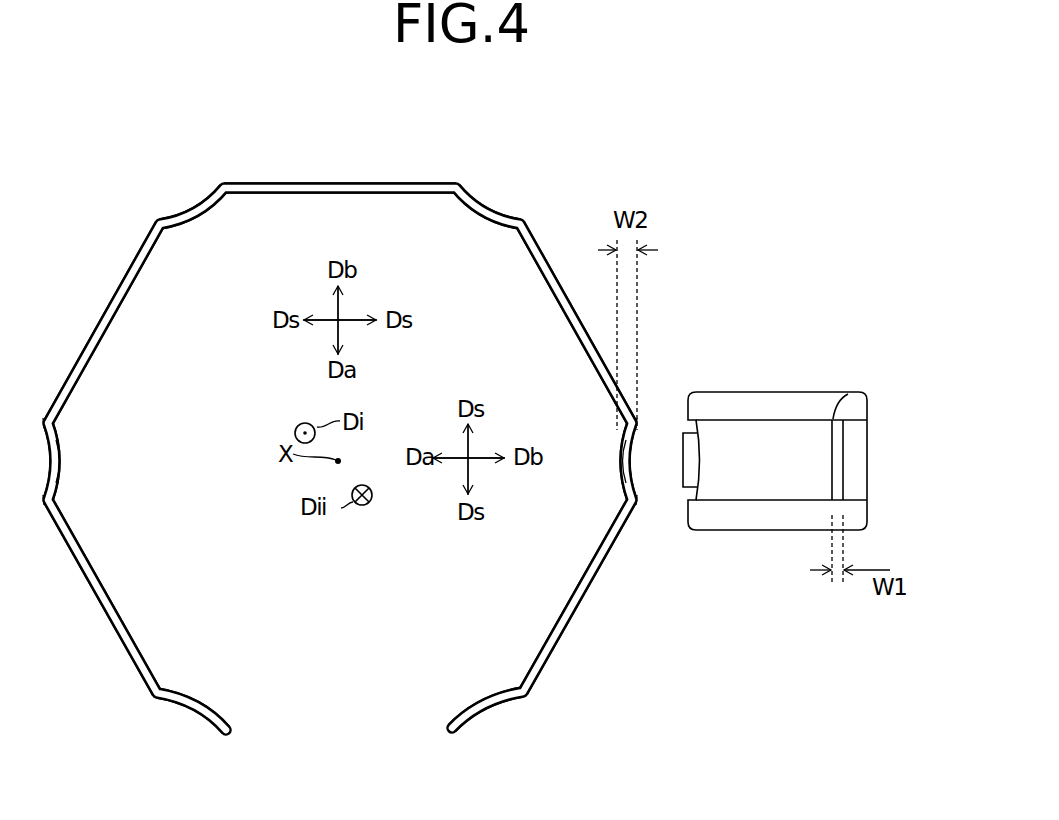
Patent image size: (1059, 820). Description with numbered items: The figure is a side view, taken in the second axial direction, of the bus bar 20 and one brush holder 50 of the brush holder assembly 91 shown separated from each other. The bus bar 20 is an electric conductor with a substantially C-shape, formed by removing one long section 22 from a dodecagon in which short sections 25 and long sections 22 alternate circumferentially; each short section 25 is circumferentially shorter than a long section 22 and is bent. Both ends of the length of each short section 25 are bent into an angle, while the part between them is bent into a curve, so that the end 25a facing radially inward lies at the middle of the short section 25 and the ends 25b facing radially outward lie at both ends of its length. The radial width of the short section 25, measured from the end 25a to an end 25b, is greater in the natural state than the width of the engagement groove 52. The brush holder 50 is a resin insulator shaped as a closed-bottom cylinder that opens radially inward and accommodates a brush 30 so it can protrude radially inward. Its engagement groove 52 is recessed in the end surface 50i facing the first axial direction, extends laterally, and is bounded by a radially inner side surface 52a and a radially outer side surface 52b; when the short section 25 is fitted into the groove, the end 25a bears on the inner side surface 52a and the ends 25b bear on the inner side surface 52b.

The bus bar 20 is at (533, 180).
The long section 22 is at (337, 190).
The short section 25 is at (203, 202).
The end facing in the radially inward direction 25a is at (199, 220).
The end facing in the radially outward direction 25b is at (155, 219).
The brush 30 is at (685, 488).
The brush holder 50 is at (728, 403).
The end surface 50i is at (757, 484).
The engagement groove 52 is at (832, 433).
The inner side surface 52a is at (830, 449).
The inner side surface 52b is at (846, 486).
The brush holder assembly 91 is at (784, 143).